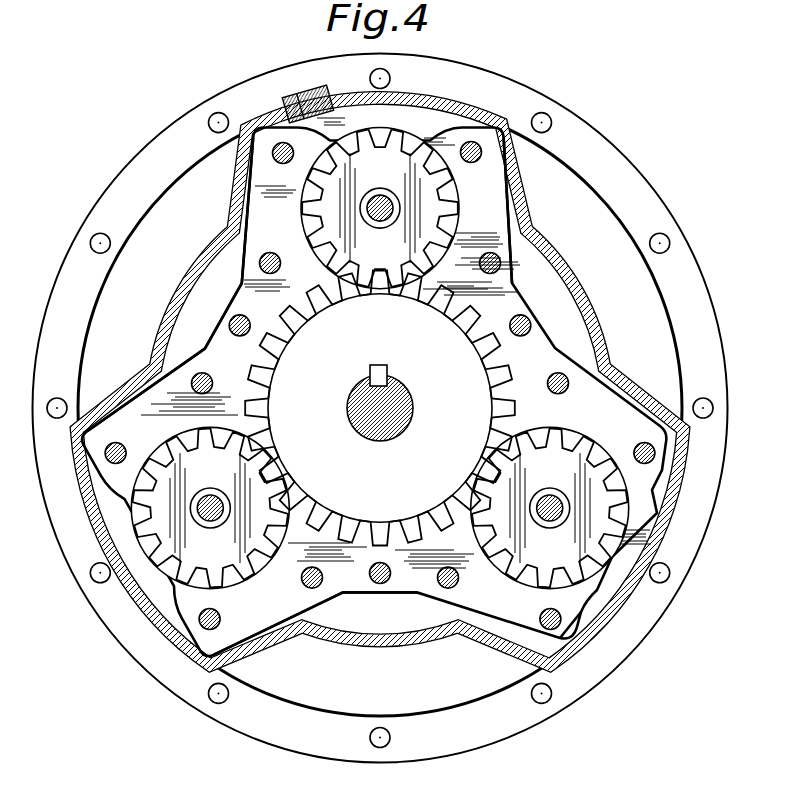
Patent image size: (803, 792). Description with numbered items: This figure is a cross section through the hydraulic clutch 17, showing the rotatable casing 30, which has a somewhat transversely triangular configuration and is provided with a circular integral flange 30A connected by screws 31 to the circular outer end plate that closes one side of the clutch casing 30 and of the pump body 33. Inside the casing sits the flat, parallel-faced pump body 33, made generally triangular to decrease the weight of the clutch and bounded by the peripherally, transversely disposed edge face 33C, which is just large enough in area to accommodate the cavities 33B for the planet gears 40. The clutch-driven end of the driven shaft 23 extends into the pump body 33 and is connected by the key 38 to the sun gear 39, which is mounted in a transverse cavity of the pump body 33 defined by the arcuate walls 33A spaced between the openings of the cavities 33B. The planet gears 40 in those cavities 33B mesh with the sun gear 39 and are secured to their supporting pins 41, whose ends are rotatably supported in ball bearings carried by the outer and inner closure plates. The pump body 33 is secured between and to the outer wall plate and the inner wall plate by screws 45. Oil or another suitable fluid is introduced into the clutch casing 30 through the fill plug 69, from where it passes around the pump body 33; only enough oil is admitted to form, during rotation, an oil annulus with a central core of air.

The hydraulic clutch 17 is at (523, 83).
The driven shaft 23 is at (397, 403).
The rotatable casing 30 is at (598, 313).
The circular integral flange 30A is at (585, 140).
The screws 31 is at (545, 118).
The pump body 33 is at (507, 287).
The arcuate walls 33A is at (245, 342).
The cavities 33B is at (457, 220).
The edge face 33C is at (247, 216).
The key 38 is at (383, 378).
The sun gear 39 is at (290, 333).
The planet gears 40 is at (402, 170).
The supporting pins 41 is at (383, 200).
The screws 45 is at (107, 457).
The fill plug 69 is at (292, 100).